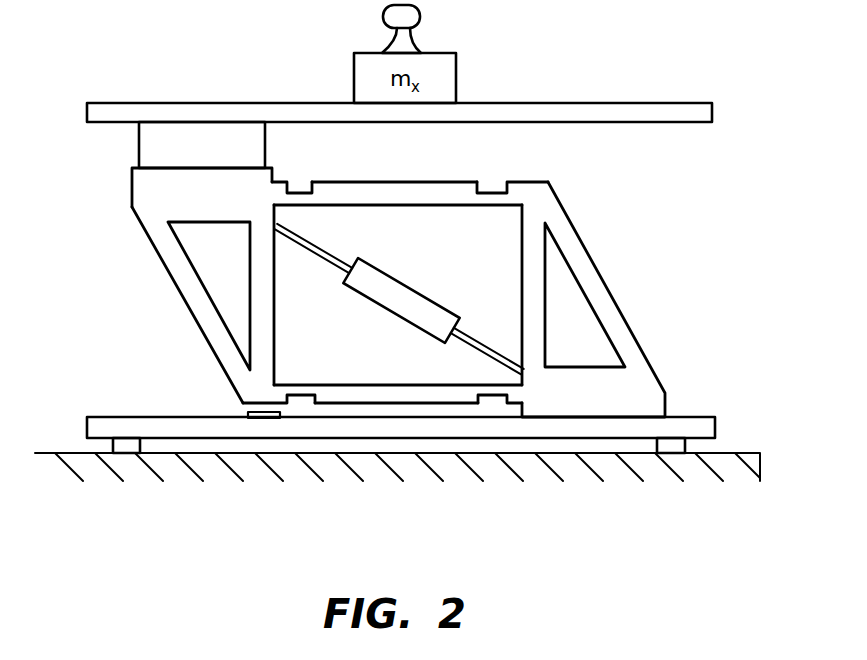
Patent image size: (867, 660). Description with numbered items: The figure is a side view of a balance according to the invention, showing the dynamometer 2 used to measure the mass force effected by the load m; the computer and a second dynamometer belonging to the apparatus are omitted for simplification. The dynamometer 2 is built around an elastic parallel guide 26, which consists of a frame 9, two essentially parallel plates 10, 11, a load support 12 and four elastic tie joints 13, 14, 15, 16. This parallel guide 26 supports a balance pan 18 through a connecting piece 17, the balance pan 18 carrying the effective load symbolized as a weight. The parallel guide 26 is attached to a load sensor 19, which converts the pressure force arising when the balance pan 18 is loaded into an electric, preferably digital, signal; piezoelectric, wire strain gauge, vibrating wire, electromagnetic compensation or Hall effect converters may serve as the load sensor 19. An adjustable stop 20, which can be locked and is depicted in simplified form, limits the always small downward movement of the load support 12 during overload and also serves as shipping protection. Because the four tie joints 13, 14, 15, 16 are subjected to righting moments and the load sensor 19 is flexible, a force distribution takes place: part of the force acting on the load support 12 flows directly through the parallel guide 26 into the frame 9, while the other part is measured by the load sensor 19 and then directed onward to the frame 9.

The dynamometer 2 is at (623, 233).
The frame 9 is at (617, 322).
The plate 10 is at (387, 200).
The plate 11 is at (398, 395).
The load support 12 is at (153, 193).
The elastic tie joint 13 is at (493, 193).
The elastic tie joint 14 is at (297, 193).
The elastic tie joint 15 is at (305, 393).
The elastic tie joint 16 is at (488, 393).
The connecting piece 17 is at (153, 147).
The balance pan 18 is at (127, 110).
The load sensor 19 is at (400, 304).
The adjustable stop 20 is at (250, 412).
The elastic parallel guide 26 is at (297, 318).